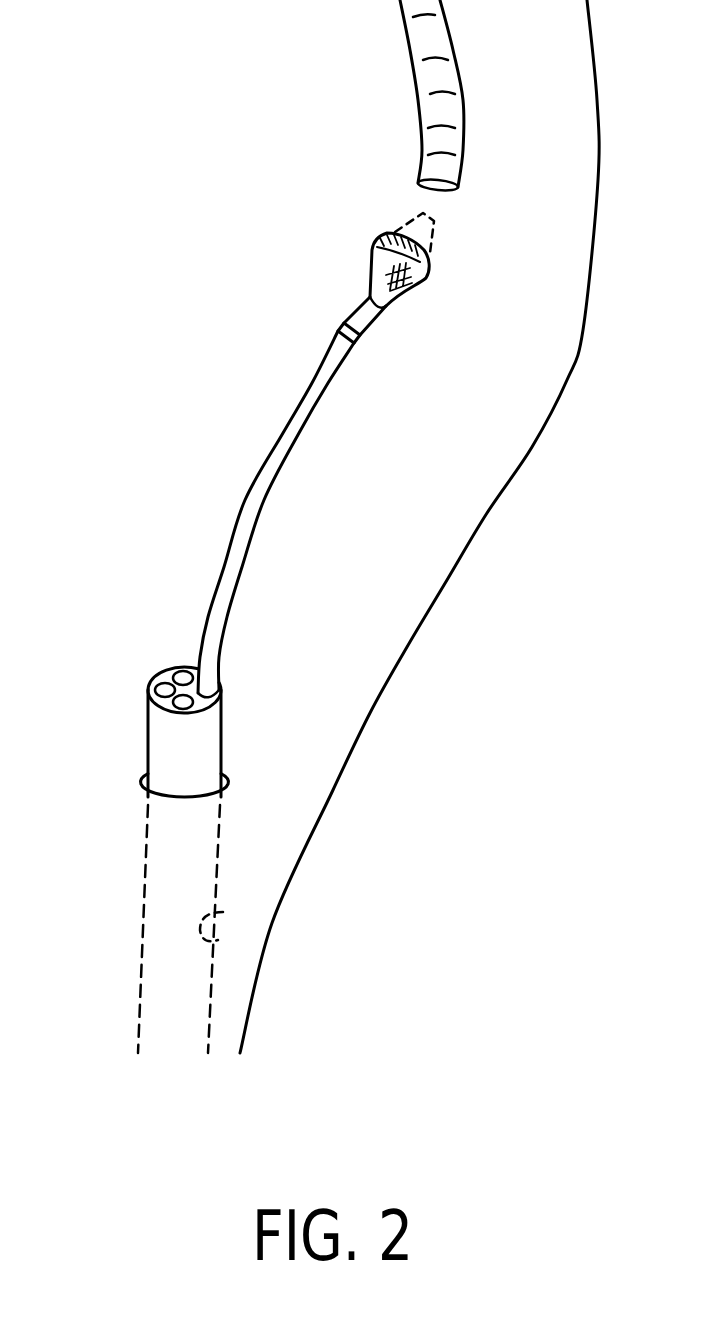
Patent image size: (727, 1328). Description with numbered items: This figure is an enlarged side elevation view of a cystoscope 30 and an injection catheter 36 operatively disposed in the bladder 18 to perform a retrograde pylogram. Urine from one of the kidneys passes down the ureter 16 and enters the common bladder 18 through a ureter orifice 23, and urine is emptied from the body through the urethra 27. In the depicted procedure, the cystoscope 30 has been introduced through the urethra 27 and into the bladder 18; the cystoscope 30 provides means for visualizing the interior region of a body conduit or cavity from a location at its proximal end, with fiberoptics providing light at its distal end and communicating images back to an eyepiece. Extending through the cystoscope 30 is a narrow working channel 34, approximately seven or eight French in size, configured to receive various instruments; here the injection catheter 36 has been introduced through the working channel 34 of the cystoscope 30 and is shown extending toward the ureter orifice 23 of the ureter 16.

The ureter 16 is at (437, 80).
The bladder 18 is at (487, 442).
The ureter orifice 23 is at (440, 190).
The urethra 27 is at (223, 912).
The cystoscope 30 is at (163, 728).
The working channel 34 is at (207, 707).
The injection catheter 36 is at (258, 503).